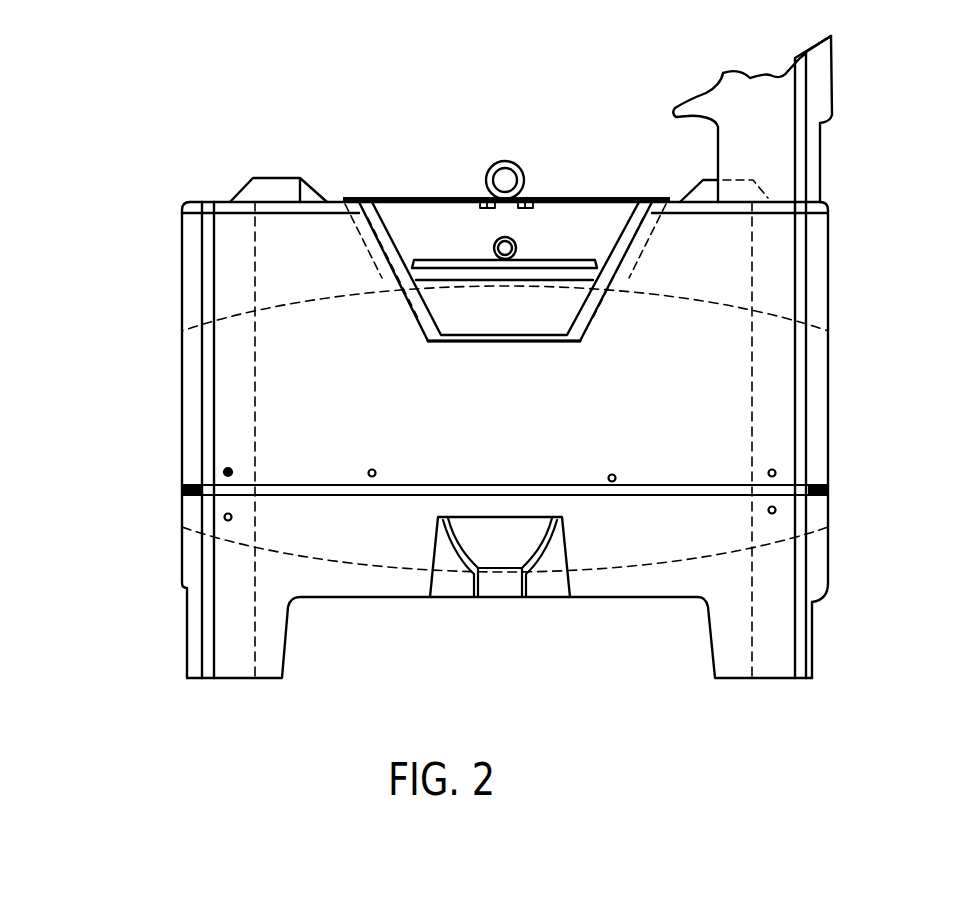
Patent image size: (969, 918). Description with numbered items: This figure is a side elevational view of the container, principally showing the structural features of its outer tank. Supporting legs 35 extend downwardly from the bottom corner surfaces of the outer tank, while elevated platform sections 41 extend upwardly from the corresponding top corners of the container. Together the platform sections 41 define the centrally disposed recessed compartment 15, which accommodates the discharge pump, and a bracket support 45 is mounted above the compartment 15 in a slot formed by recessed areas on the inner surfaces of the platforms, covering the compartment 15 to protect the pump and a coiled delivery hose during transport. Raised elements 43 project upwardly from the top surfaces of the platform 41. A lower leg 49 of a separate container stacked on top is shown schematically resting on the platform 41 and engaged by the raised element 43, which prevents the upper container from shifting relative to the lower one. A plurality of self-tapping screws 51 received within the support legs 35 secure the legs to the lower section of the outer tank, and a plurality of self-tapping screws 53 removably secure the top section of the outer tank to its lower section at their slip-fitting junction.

The recessed compartment 15 is at (452, 318).
The supporting legs 35 is at (230, 676).
The elevated platform sections 41 is at (223, 199).
The raised elements 43 is at (270, 178).
The bracket support 45 is at (427, 196).
The lower leg 49 is at (822, 145).
The self-tapping screws 51 is at (228, 517).
The self-tapping screws 53 is at (612, 480).